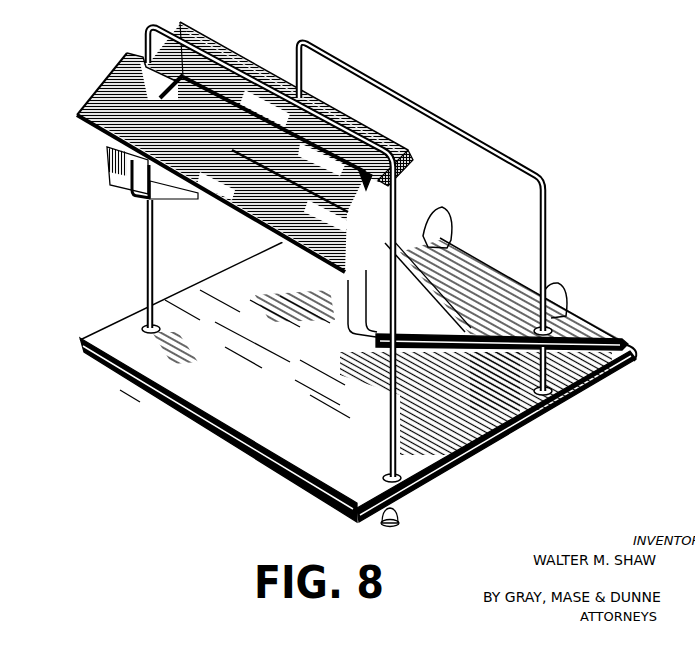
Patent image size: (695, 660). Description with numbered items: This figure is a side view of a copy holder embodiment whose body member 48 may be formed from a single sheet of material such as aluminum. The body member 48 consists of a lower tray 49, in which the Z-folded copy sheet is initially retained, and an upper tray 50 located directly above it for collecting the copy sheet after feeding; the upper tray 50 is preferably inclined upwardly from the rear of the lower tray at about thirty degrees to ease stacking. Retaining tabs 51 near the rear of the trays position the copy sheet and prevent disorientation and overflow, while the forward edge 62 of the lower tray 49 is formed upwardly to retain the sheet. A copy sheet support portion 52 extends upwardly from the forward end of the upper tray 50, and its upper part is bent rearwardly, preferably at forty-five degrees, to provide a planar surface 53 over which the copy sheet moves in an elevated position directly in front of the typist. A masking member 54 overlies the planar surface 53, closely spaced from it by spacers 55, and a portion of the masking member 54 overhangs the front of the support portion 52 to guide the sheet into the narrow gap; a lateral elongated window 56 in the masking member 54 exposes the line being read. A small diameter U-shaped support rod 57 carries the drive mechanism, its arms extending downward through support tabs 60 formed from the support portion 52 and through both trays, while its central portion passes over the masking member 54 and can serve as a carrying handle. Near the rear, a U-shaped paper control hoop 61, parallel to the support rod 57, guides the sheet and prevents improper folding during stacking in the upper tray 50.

The body member 48 is at (600, 318).
The lower tray 49 is at (283, 396).
The upper tray 50 is at (449, 290).
The retaining tabs 51 is at (449, 220).
The copy sheet support portion 52 is at (350, 325).
The planar surface 53 is at (296, 167).
The masking member 54 is at (286, 210).
The spacers 55 is at (388, 251).
The window 56 is at (162, 87).
The support rod 57 is at (268, 85).
The support tabs 60 is at (146, 56).
The paper control hoop 61 is at (339, 58).
The forward edge 62 is at (257, 453).